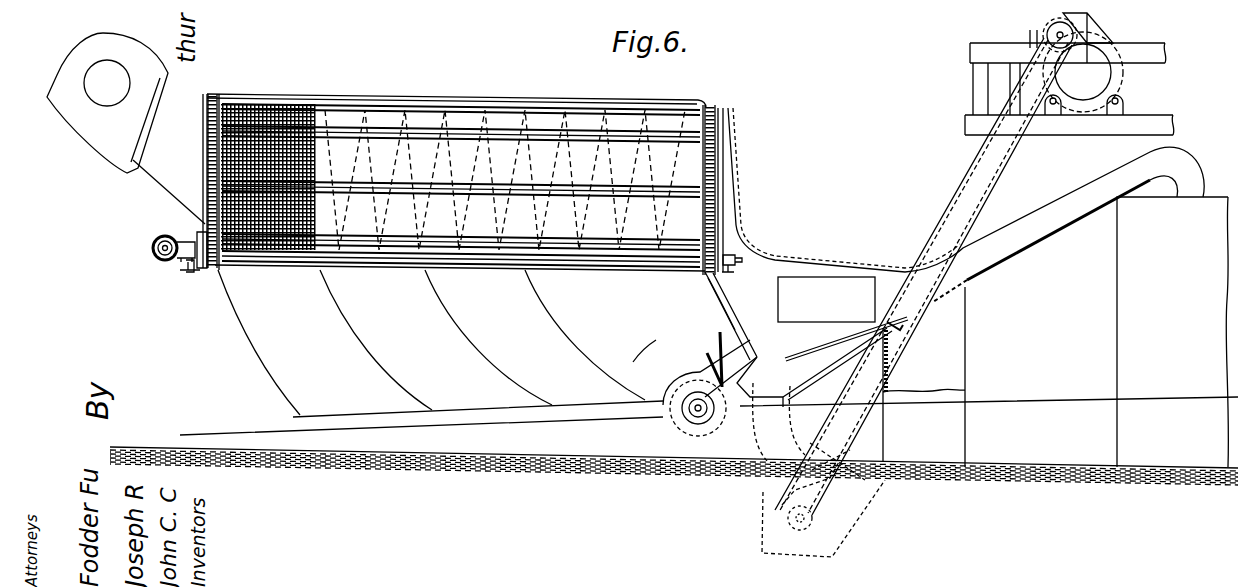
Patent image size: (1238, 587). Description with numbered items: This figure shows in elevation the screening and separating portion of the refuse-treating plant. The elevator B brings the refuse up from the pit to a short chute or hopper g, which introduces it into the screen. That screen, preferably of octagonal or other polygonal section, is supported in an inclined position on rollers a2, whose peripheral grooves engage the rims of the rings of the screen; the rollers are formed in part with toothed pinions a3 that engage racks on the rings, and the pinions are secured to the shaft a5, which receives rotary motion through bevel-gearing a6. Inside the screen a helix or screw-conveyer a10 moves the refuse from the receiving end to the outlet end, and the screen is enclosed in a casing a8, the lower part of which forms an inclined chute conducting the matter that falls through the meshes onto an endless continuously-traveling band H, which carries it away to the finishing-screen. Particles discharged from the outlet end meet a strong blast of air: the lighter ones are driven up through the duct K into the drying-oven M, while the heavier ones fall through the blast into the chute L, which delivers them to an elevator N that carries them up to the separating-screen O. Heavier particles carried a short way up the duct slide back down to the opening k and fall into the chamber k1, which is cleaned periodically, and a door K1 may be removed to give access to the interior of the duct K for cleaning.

The elevator B is at (107, 103).
The chute or hopper g is at (169, 192).
The rollers a2 is at (726, 248).
The toothed pinions a3 is at (680, 282).
The shaft a5 is at (502, 252).
The bevel-gearing a6 is at (183, 232).
The casing a8 is at (502, 101).
The helix or screw-conveyer a10 is at (575, 165).
The endless continuously-traveling band H is at (674, 437).
The duct K is at (956, 234).
The door K1 is at (826, 299).
The opening k is at (852, 351).
The chamber k1 is at (924, 377).
The chute L is at (734, 397).
The drying-oven M is at (1172, 332).
The elevator N is at (1038, 38).
The separating-screen O is at (1115, 83).